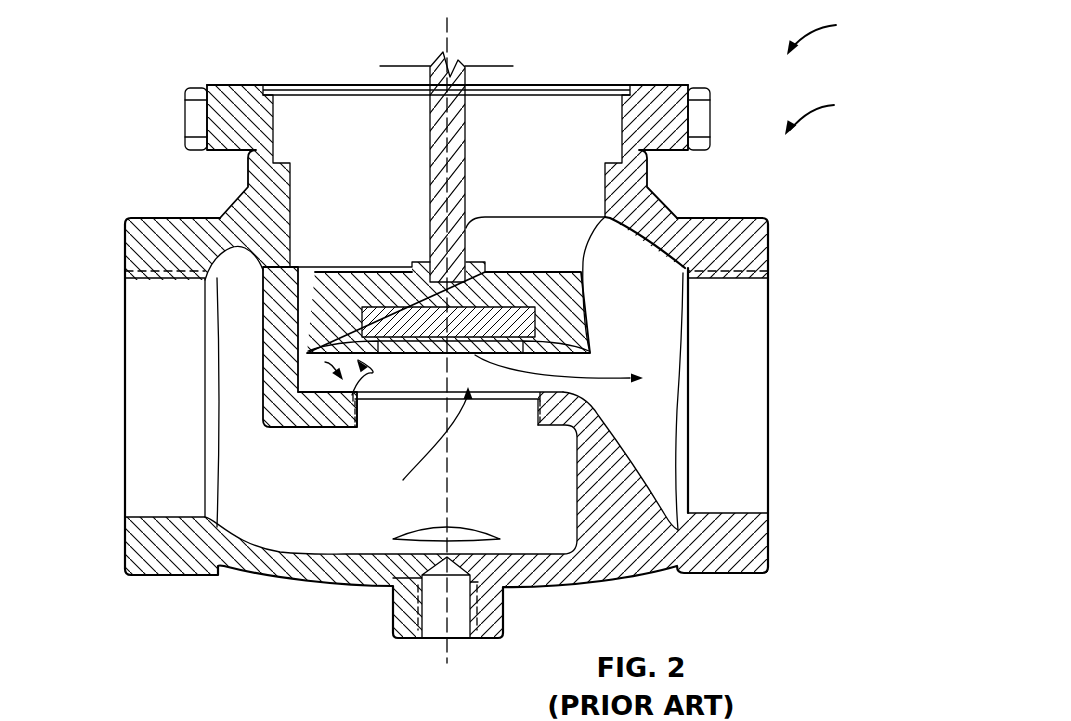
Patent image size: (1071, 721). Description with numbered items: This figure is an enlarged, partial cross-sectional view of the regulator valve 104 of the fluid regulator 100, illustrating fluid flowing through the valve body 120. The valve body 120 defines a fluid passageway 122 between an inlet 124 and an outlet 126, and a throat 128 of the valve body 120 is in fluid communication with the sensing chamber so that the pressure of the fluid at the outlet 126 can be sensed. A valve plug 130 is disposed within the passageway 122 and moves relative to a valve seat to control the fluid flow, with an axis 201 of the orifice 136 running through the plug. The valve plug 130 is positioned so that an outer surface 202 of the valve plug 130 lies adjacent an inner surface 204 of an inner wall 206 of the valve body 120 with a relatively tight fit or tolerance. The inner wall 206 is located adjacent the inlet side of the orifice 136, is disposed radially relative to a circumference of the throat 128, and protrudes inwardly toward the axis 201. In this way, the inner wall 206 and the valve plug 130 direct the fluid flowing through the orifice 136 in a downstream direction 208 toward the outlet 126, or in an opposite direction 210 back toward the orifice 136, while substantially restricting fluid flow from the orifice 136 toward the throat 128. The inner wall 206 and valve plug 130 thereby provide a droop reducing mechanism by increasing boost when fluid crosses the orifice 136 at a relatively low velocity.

The fluid regulator 100 is at (836, 34).
The regulator valve 104 is at (832, 114).
The valve body 120 is at (303, 580).
The fluid passageway 122 is at (545, 521).
The inlet 124 is at (124, 393).
The outlet 126 is at (769, 393).
The throat 128 is at (498, 170).
The valve plug 130 is at (630, 197).
The orifice 136 is at (417, 415).
The axis 201 is at (440, 133).
The outer surface 202 is at (590, 313).
The inner surface 204 is at (290, 306).
The inner wall 206 is at (220, 220).
The direction 208 is at (610, 376).
The opposite direction 210 is at (325, 362).